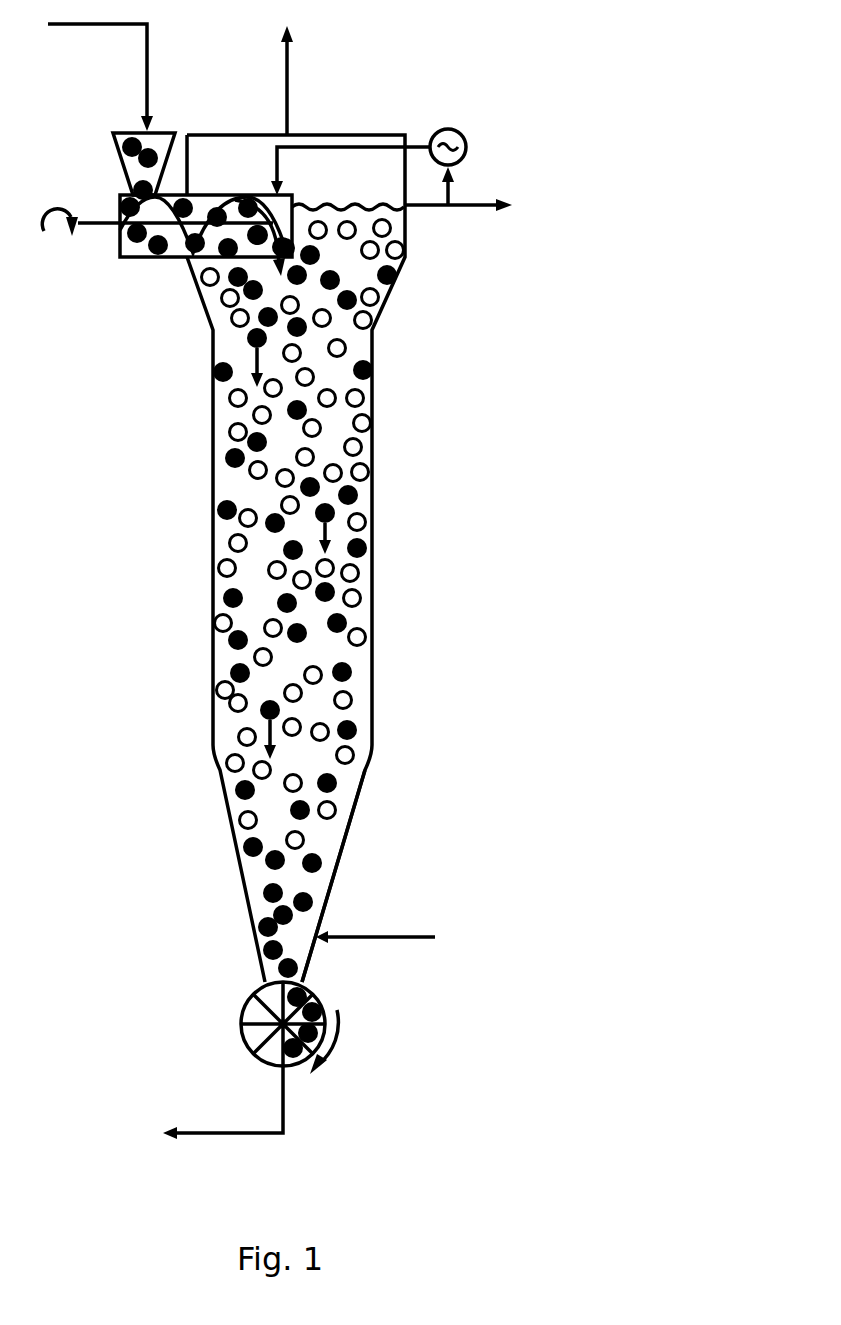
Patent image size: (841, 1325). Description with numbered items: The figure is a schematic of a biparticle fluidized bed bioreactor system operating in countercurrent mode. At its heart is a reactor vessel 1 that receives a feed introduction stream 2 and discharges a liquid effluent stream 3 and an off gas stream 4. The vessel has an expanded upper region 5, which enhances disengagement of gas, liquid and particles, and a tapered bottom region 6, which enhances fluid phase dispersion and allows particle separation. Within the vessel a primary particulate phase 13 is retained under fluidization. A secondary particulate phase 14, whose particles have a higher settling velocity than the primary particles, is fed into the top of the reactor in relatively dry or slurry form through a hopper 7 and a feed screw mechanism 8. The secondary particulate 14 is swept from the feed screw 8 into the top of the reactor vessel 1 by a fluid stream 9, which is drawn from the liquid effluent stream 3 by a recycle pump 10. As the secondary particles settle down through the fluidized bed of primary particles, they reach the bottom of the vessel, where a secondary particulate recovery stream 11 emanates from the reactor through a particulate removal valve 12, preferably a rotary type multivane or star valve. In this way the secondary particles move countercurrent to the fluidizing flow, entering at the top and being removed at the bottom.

The reactor vessel 1 is at (213, 600).
The feed introduction stream 2 is at (400, 916).
The liquid effluent stream 3 is at (463, 207).
The off gas stream 4 is at (287, 82).
The expanded upper region 5 is at (403, 275).
The tapered bottom region 6 is at (345, 835).
The hopper 7 is at (120, 148).
The feed screw mechanism 8 is at (165, 258).
The fluid stream 9 is at (356, 147).
The recycle pump 10 is at (462, 137).
The secondary particulate recovery stream 11 is at (230, 1133).
The particulate removal valve 12 is at (325, 1000).
The primary particulate phase 13 is at (225, 706).
The secondary particulate phase 14 is at (245, 845).